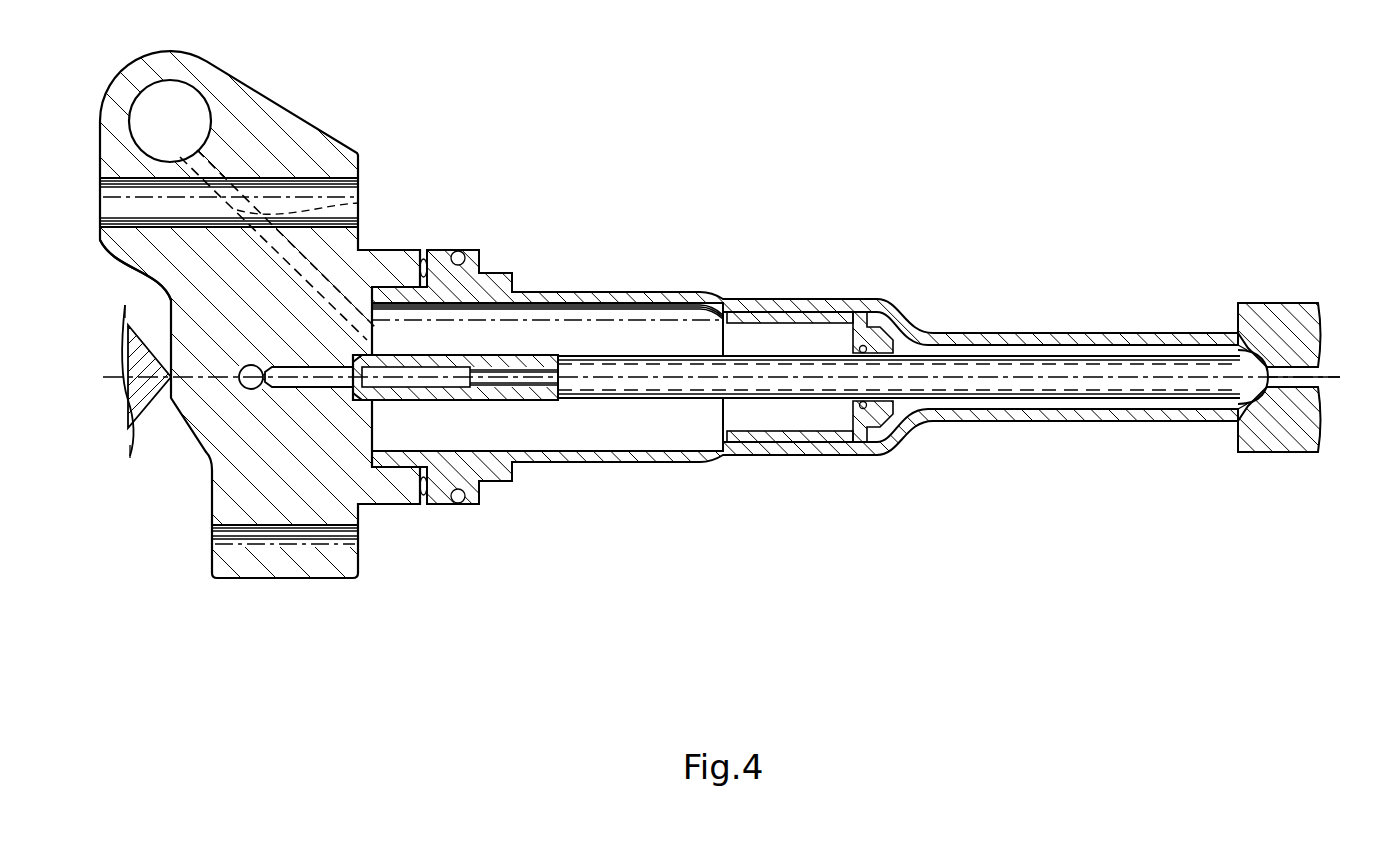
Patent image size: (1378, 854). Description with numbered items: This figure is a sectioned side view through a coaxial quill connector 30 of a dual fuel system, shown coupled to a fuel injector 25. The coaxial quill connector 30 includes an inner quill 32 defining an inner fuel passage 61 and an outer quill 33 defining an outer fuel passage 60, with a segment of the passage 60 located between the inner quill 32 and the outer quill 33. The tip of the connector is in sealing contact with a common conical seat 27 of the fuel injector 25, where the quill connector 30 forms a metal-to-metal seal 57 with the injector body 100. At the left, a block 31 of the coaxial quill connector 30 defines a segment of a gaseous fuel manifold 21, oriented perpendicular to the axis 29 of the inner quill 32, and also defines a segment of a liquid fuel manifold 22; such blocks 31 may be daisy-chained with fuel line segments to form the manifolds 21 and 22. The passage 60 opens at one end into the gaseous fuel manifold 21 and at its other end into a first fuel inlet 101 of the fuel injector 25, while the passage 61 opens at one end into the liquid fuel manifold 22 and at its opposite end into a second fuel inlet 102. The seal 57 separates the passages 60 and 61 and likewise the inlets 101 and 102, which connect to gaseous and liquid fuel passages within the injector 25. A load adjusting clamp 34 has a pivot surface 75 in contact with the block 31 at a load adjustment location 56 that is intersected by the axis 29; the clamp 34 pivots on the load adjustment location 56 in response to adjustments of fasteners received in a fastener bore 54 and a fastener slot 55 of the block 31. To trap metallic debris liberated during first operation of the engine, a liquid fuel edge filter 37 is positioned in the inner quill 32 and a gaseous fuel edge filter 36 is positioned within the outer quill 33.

The gaseous fuel manifold 21 is at (134, 106).
The liquid fuel manifold 22 is at (240, 390).
The fuel injector 25 is at (1238, 442).
The common conical seat 27 is at (1244, 347).
The axis 29 is at (1150, 376).
The coaxial quill connector 30 is at (745, 232).
The block 31 is at (270, 96).
The inner quill 32 is at (1047, 366).
The outer quill 33 is at (932, 424).
The load adjusting clamp 34 is at (133, 430).
The gaseous fuel edge filter 36 is at (800, 320).
The liquid fuel edge filter 37 is at (428, 374).
The fastener bore 54 is at (106, 248).
The fastener slot 55 is at (287, 548).
The load adjustment location 56 is at (166, 384).
The metal-to-metal seal 57 is at (1252, 385).
The outer fuel passage 60 is at (360, 203).
The inner fuel passage 61 is at (330, 385).
The pivot surface 75 is at (168, 372).
The injector body 100 is at (1305, 397).
The first fuel inlet 101 is at (1271, 403).
The second fuel inlet 102 is at (1283, 362).